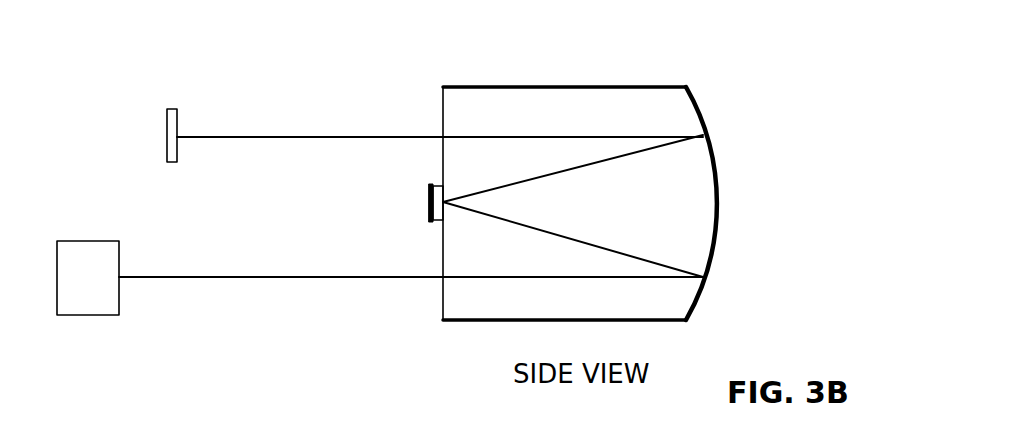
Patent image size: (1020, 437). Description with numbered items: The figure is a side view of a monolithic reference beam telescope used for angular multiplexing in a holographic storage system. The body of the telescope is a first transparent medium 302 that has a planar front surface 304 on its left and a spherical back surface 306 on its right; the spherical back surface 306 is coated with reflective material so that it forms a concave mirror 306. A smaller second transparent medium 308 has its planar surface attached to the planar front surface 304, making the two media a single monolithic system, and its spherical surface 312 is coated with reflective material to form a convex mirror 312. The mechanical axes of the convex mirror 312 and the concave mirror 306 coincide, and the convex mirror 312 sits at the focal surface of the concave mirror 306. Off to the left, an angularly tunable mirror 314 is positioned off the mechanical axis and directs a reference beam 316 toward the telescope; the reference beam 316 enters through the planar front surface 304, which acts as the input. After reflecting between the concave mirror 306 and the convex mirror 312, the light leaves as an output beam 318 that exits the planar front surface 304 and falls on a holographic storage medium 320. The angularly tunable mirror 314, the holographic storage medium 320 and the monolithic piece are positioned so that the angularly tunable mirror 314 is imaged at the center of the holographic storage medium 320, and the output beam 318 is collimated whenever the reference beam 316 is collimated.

The first transparent medium 302 is at (547, 87).
The planar front surface 304 is at (443, 295).
The spherical back surface / concave mirror 306 is at (717, 197).
The second transparent medium 308 is at (437, 222).
The spherical surface / convex mirror 312 is at (428, 205).
The angularly tunable mirror 314 is at (168, 118).
The reference beam 316 is at (290, 137).
The output beam 318 is at (250, 277).
The holographic storage medium 320 is at (112, 241).